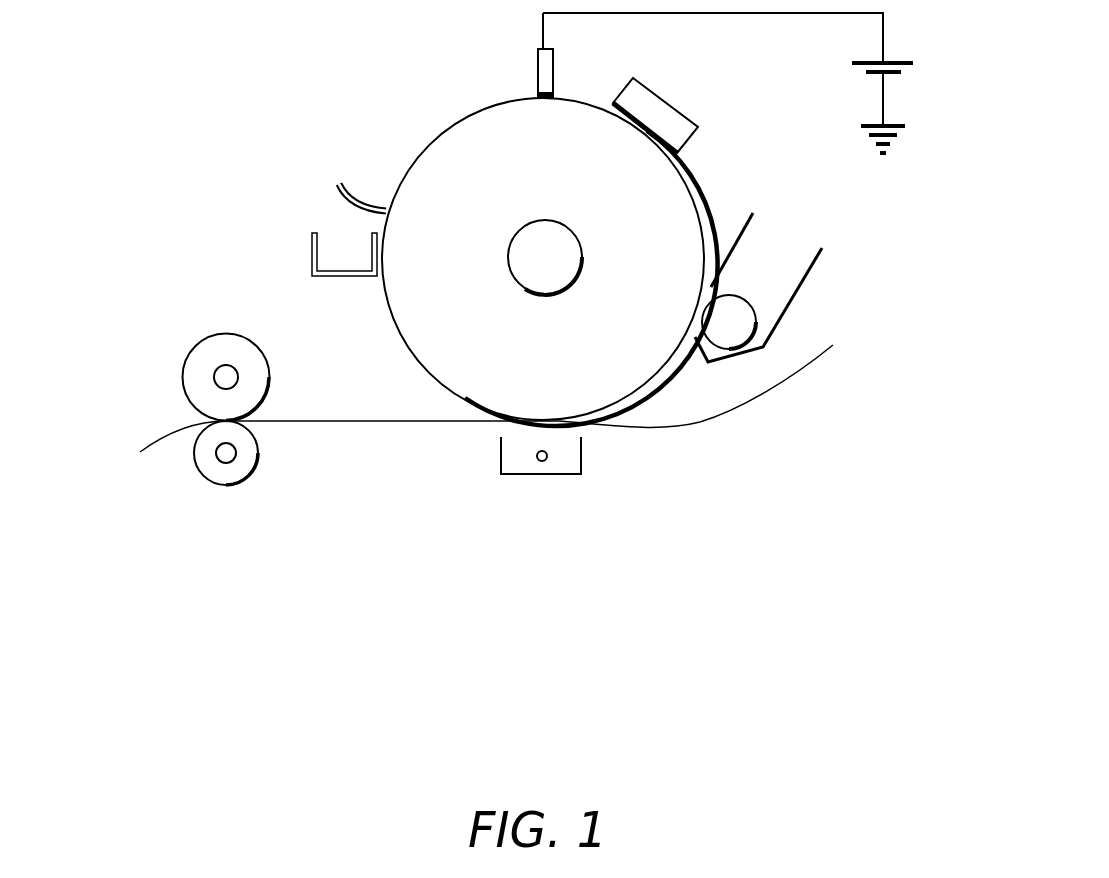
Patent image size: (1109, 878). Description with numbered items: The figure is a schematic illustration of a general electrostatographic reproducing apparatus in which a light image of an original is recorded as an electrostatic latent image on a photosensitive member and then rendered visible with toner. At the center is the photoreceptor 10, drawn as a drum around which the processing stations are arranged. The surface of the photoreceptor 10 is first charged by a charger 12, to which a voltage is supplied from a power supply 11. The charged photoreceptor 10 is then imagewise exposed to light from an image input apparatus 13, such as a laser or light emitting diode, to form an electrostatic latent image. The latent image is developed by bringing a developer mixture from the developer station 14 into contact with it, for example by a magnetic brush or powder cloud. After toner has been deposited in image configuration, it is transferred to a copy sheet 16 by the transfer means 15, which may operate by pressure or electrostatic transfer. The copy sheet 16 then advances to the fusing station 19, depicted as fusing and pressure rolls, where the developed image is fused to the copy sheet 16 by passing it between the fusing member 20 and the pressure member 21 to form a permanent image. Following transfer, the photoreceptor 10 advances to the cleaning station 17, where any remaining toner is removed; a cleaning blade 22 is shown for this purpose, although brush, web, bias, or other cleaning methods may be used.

The photoreceptor 10 is at (694, 191).
The power supply 11 is at (884, 50).
The charger 12 is at (538, 82).
The image input apparatus 13 is at (672, 105).
The developer station 14 is at (766, 262).
The transfer means 15 is at (582, 447).
The copy sheet 16 is at (785, 383).
The cleaning station 17 is at (327, 204).
The fusing station 19 is at (150, 402).
The fusing member 20 is at (265, 363).
The pressure member 21 is at (250, 457).
The cleaning blade 22 is at (369, 193).